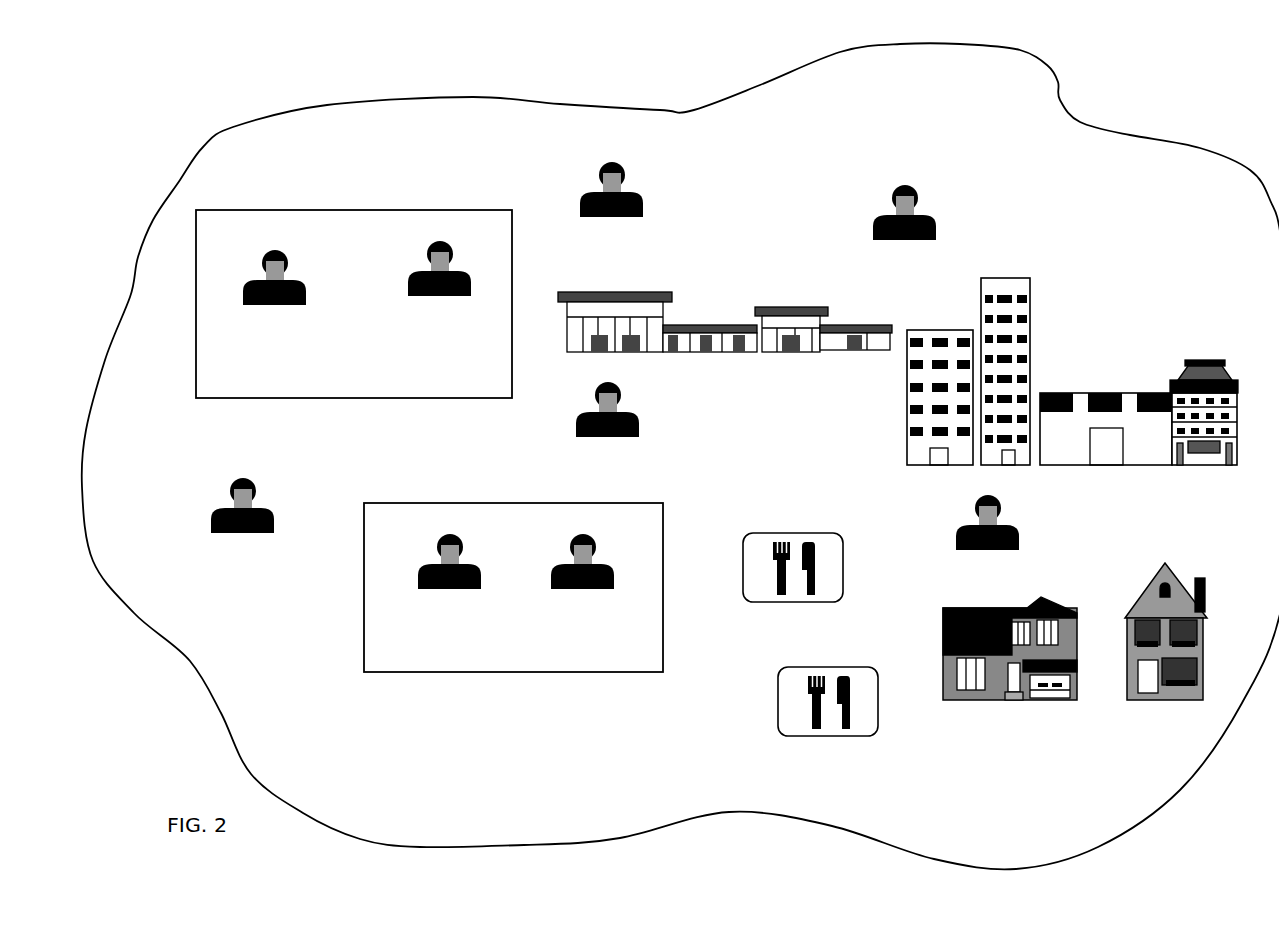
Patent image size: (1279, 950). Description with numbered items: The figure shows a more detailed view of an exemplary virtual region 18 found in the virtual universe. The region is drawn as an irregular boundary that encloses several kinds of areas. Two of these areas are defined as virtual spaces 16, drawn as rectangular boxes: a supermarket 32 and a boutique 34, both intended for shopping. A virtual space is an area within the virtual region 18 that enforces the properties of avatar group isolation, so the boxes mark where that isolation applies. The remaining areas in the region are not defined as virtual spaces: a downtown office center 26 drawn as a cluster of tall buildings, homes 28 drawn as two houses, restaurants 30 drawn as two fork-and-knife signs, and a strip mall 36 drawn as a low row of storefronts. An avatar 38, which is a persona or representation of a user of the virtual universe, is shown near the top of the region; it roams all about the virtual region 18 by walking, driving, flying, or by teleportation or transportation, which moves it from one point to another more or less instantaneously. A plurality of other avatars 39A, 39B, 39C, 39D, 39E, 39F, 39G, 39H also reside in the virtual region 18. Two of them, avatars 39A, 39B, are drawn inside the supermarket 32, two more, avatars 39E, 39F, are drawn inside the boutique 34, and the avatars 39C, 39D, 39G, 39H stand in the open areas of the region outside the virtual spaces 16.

The virtual region 18 is at (1060, 100).
The virtual spaces 16 is at (310, 210).
The supermarket 32 is at (354, 304).
The boutique 34 is at (513, 587).
The strip mall 36 is at (775, 352).
The downtown office center 26 is at (1080, 393).
The homes 28 is at (973, 700).
The restaurants 30 is at (793, 533).
The avatar 38 is at (557, 167).
The avatar 39A is at (274, 292).
The avatar 39B is at (444, 281).
The avatar 39C is at (243, 519).
The avatar 39D is at (607, 423).
The avatar 39E is at (450, 575).
The avatar 39F is at (583, 575).
The avatar 39G is at (905, 226).
The avatar 39H is at (987, 538).